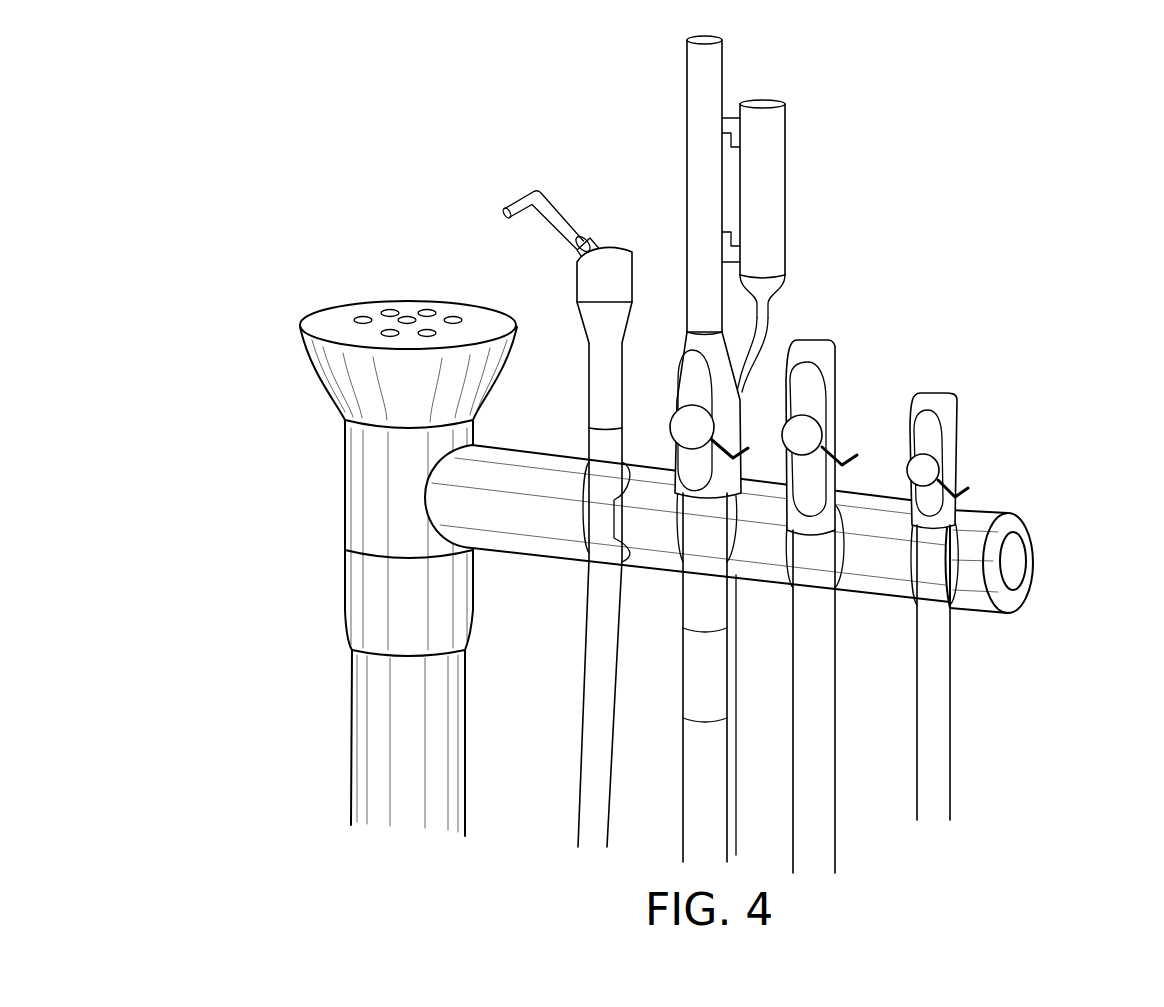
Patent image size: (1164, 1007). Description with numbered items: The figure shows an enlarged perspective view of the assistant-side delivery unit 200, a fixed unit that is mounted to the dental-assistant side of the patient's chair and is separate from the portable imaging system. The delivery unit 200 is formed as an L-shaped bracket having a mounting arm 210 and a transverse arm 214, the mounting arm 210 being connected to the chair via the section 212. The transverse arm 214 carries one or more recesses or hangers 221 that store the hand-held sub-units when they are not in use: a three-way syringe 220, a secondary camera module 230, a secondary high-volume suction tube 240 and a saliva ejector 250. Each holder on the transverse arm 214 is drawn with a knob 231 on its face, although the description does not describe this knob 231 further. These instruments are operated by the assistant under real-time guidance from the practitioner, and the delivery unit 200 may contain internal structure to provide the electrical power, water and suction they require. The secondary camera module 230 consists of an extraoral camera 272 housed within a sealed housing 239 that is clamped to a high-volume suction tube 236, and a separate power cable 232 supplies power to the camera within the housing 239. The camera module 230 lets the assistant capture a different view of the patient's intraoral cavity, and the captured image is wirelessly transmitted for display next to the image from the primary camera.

The assistant-side delivery unit 200 is at (326, 160).
The mounting arm 210 is at (365, 485).
The section 212 is at (373, 752).
The transverse arm 214 is at (1028, 522).
The three-way syringe 220 is at (575, 319).
The recesses or hangers 221 is at (589, 556).
The secondary camera module 230 is at (714, 361).
The holder knob 231 is at (690, 418).
The power cable 232 is at (730, 688).
The high-volume suction tube 236 is at (700, 110).
The housing 239 is at (773, 167).
The secondary high-volume suction tube 240 is at (836, 380).
The saliva ejector 250 is at (946, 425).
The extraoral camera 272 is at (762, 102).